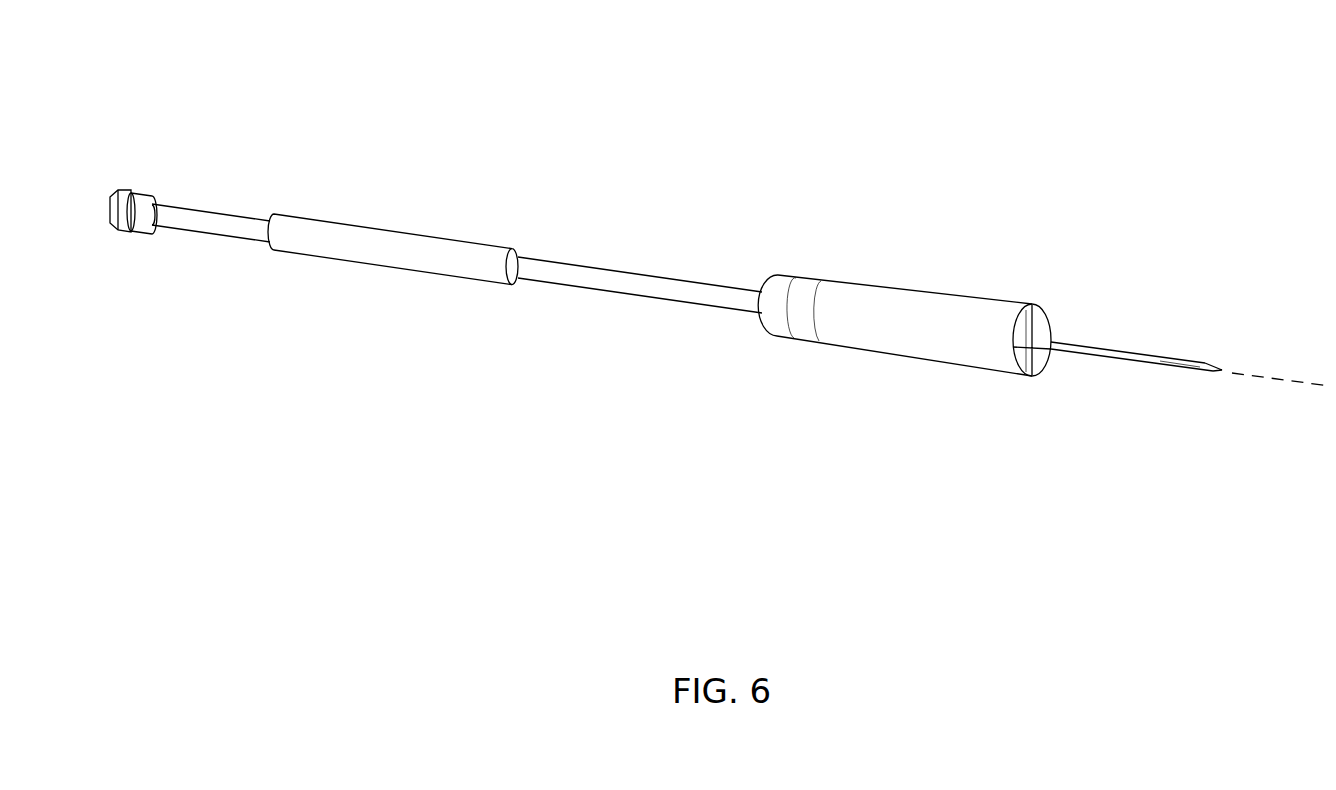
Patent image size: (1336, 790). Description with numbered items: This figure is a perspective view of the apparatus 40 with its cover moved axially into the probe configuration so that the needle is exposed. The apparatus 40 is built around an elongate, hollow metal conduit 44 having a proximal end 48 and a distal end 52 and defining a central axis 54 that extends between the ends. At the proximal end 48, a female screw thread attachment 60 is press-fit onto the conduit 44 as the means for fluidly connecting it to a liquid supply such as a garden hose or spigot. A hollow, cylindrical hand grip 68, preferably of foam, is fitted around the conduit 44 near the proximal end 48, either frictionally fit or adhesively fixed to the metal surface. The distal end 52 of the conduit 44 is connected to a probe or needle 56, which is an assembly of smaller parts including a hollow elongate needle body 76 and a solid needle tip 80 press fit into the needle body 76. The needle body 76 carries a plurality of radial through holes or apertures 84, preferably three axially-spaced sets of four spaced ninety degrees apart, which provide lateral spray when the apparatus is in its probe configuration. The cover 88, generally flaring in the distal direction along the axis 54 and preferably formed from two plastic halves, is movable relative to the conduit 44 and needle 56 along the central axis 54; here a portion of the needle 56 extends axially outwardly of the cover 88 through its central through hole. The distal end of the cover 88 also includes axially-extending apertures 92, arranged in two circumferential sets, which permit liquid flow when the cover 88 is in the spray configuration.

The apparatus 40 is at (242, 121).
The proximal end 48 is at (108, 204).
The female screw thread attachment 60 is at (120, 190).
The conduit 44 is at (605, 278).
The hand grip 68 is at (377, 243).
The distal end 52 is at (759, 284).
The cover 88 is at (900, 303).
The apertures 92 is at (1043, 309).
The needle 56 is at (1130, 344).
The needle body 76 is at (1132, 368).
The needle tip 80 is at (1206, 365).
The apertures 84 is at (1178, 367).
The central axis 54 is at (1269, 378).